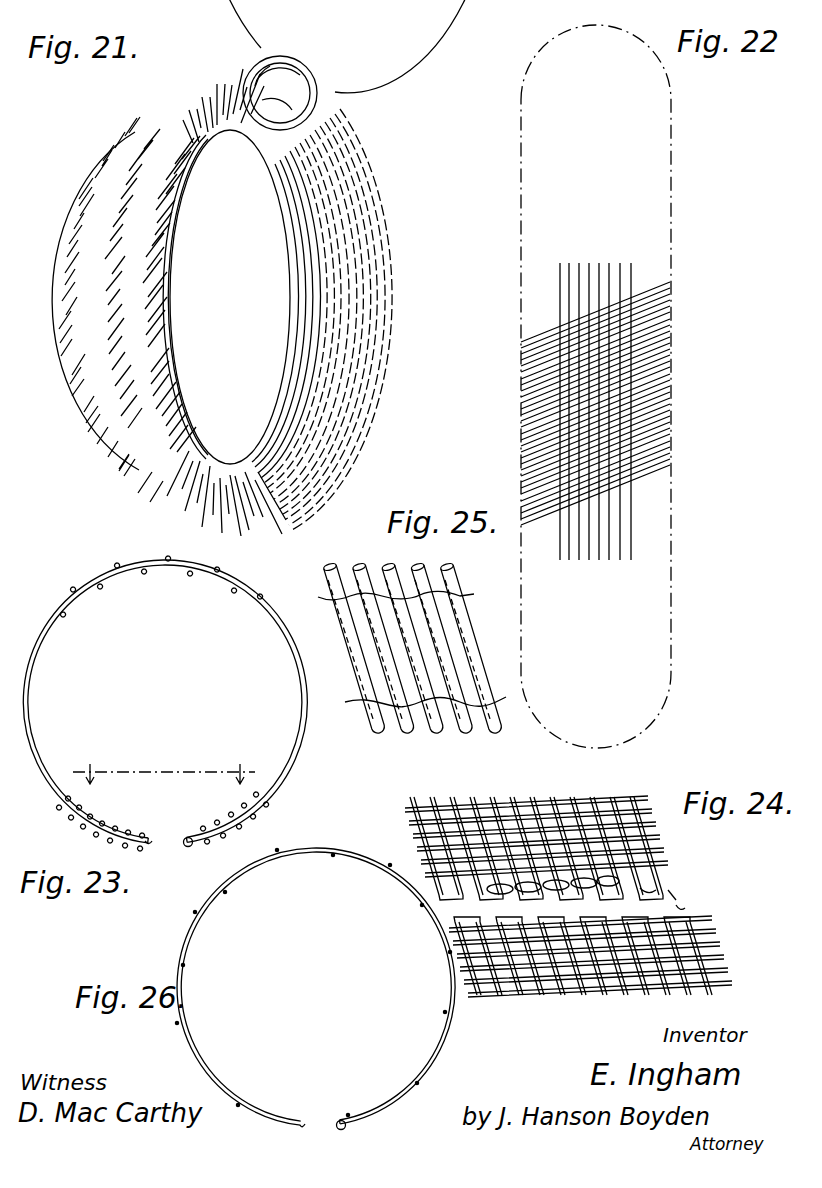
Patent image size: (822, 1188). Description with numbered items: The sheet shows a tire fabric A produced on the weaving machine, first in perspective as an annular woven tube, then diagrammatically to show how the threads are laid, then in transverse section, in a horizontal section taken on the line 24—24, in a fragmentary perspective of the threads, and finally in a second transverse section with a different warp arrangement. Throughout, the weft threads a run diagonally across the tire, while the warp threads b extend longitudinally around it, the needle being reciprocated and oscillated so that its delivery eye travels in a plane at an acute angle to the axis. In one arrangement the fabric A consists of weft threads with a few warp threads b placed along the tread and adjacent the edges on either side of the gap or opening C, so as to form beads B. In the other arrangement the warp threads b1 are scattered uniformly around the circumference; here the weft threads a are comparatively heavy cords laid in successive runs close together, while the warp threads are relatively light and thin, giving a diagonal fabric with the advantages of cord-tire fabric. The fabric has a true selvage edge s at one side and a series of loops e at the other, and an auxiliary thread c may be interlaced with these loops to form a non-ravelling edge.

In FIG. 21, the fabric A is at (330, 147).
In FIG. 22, the fabric A is at (664, 162).
In FIG. 21, the gap or opening C is at (283, 124).
In FIG. 23, the gap or opening C is at (168, 837).
In FIG. 24, the gap or opening C is at (678, 904).
In FIG. 26, the gap or opening C is at (322, 1122).
In FIG. 22, the weft threads a is at (521, 372).
In FIG. 25, the weft threads a is at (451, 590).
In FIG. 23, the weft threads a is at (287, 650).
In FIG. 24, the weft threads a is at (573, 797).
In FIG. 26, the weft threads a is at (350, 852).
In FIG. 22, the warp threads b is at (609, 263).
In FIG. 23, the warp threads b is at (222, 567).
In FIG. 24, the warp threads b is at (412, 845).
In FIG. 25, the warp threads b1 is at (474, 594).
In FIG. 26, the warp threads b1 is at (222, 890).
In FIG. 24, the auxiliary thread c is at (553, 896).
In FIG. 23, the loops e is at (154, 826).
In FIG. 24, the loops e is at (654, 901).
In FIG. 26, the loops e is at (297, 1124).
In FIG. 23, the selvage edge s is at (185, 847).
In FIG. 24, the selvage edge s is at (682, 918).
In FIG. 26, the selvage edge s is at (340, 1130).
In FIG. 23, the beads B is at (222, 812).
In FIG. 23, the section line 24- 24 is at (149, 763).